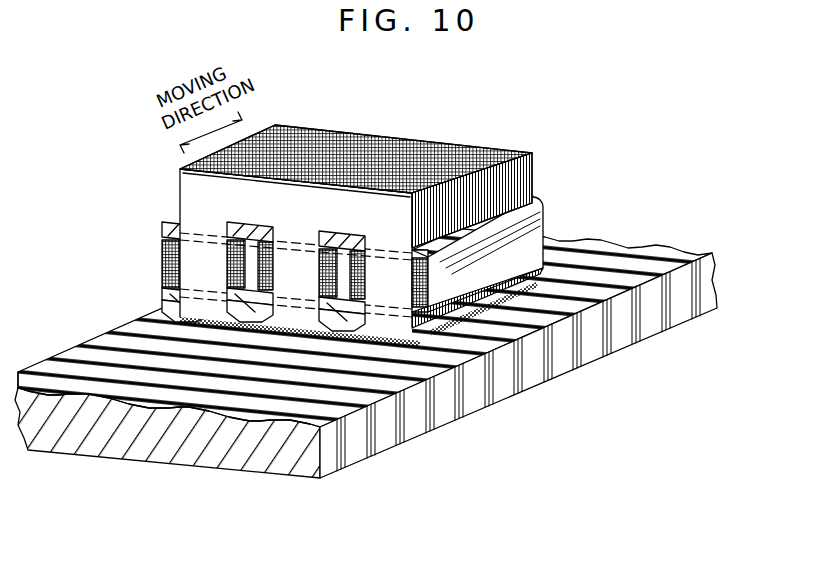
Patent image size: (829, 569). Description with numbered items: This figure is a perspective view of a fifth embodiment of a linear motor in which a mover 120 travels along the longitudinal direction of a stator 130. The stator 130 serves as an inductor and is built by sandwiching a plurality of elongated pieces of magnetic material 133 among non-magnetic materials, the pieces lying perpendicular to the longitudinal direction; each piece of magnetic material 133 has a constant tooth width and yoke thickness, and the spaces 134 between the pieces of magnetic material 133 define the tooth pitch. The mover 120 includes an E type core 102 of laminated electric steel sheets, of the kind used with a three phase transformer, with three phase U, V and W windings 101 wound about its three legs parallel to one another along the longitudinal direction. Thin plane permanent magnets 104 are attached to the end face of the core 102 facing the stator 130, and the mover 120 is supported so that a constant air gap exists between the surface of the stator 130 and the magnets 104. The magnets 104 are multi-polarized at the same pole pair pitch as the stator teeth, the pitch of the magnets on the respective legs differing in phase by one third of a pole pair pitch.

The windings 101 is at (163, 247).
The E type core 102 is at (452, 152).
The permanent magnets 104 is at (178, 315).
The mover 120 is at (390, 148).
The stator 130 is at (270, 471).
The magnetic material 133 is at (460, 407).
The groove 134 is at (533, 372).